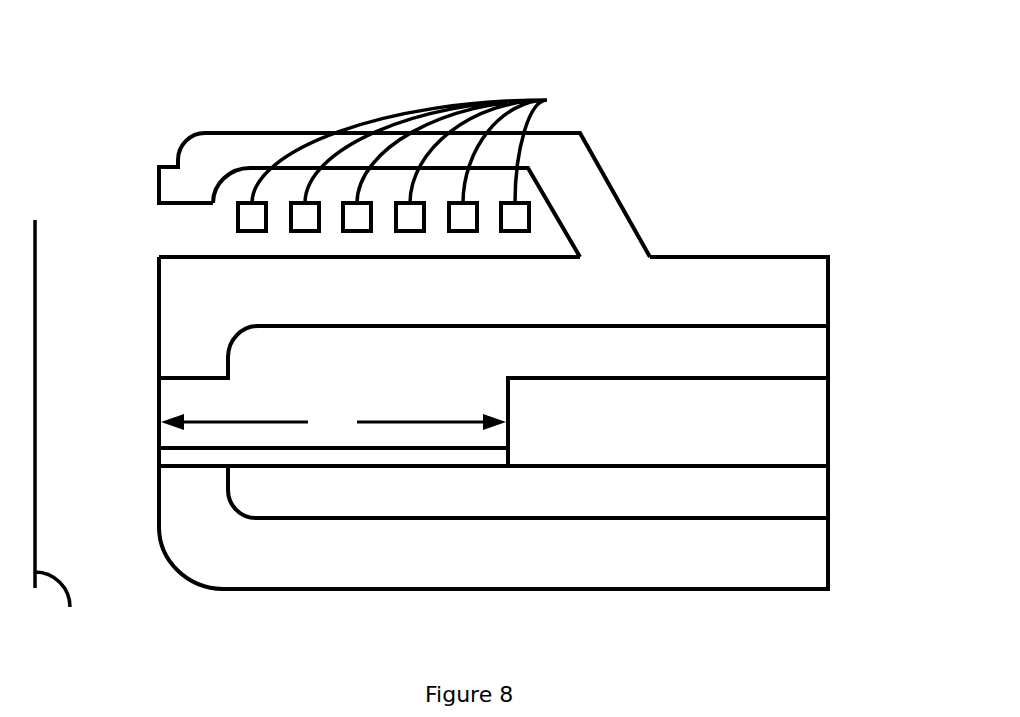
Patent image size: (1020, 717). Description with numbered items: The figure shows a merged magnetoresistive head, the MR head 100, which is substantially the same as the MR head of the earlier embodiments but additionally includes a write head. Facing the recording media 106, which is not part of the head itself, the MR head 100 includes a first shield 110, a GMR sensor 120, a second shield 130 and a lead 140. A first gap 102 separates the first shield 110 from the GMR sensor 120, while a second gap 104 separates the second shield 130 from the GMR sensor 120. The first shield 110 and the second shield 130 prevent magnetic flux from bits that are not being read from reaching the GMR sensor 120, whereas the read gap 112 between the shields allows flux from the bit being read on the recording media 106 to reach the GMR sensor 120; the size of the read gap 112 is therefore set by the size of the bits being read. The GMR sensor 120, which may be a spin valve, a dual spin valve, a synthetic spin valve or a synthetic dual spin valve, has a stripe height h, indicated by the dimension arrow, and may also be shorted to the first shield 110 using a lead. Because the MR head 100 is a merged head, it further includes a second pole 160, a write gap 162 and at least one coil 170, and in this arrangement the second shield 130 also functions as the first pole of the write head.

The MR head 100 is at (510, 53).
The first gap 102 is at (828, 485).
The second gap 104 is at (828, 347).
The recording media 106 is at (63, 427).
The first shield 110 is at (156, 502).
The read gap 112 is at (140, 467).
The GMR sensor 120 is at (386, 466).
The second shield 130 is at (158, 340).
The lead 140 is at (828, 432).
The second pole 160 is at (155, 184).
The write gap 162 is at (140, 257).
The coil 170 is at (547, 100).